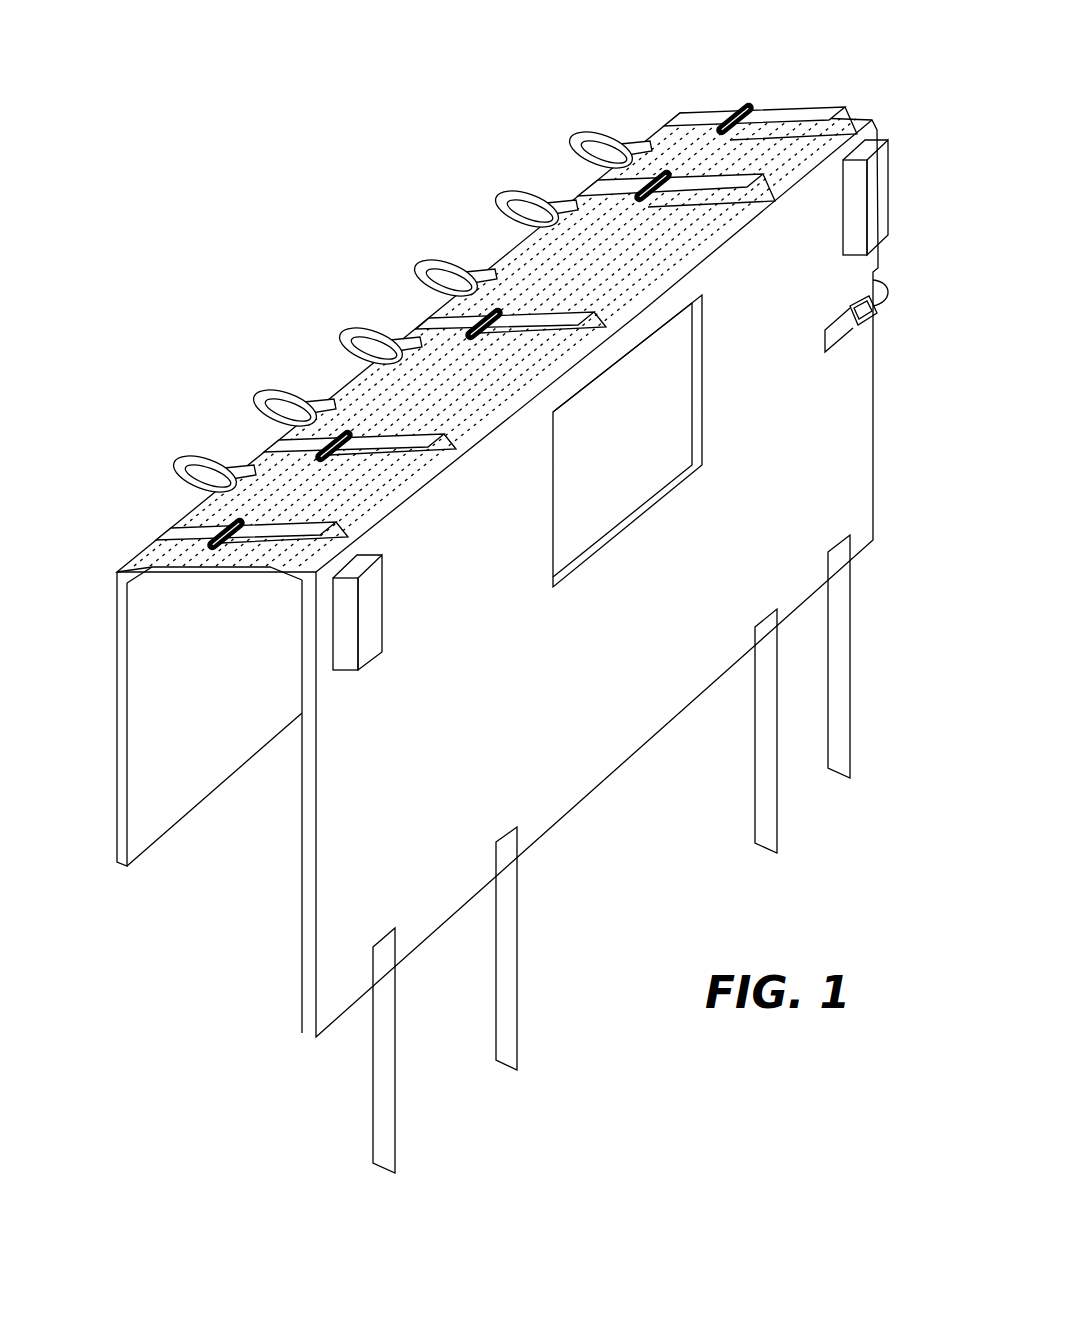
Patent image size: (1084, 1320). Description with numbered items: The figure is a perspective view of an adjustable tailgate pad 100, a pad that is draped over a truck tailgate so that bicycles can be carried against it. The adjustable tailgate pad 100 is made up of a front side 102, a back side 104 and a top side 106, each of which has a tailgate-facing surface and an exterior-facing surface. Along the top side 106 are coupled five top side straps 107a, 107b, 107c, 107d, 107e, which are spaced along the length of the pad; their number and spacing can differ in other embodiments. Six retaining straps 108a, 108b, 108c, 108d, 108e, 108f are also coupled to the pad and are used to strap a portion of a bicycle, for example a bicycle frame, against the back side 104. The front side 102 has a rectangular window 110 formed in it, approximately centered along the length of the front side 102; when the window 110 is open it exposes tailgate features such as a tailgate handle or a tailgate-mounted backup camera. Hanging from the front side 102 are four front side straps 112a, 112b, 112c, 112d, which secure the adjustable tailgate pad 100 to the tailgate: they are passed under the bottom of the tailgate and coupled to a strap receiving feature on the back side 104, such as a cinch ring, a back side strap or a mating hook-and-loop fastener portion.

The adjustable tailgate pad 100 is at (203, 167).
The front side 102 is at (900, 120).
The back side 104 is at (105, 573).
The top side 106 is at (878, 110).
The top side strap 107a is at (163, 532).
The top side strap 107b is at (265, 447).
The top side strap 107c is at (427, 313).
The top side strap 107d is at (596, 185).
The top side strap 107e is at (653, 128).
The retaining strap 108a is at (175, 468).
The retaining strap 108b is at (262, 400).
The retaining strap 108c is at (340, 330).
The retaining strap 108d is at (416, 270).
The retaining strap 108e is at (500, 202).
The retaining strap 108f is at (573, 138).
The window 110 is at (627, 441).
The front side strap 112a is at (395, 1093).
The front side strap 112b is at (517, 1013).
The front side strap 112c is at (777, 803).
The front side strap 112d is at (850, 720).